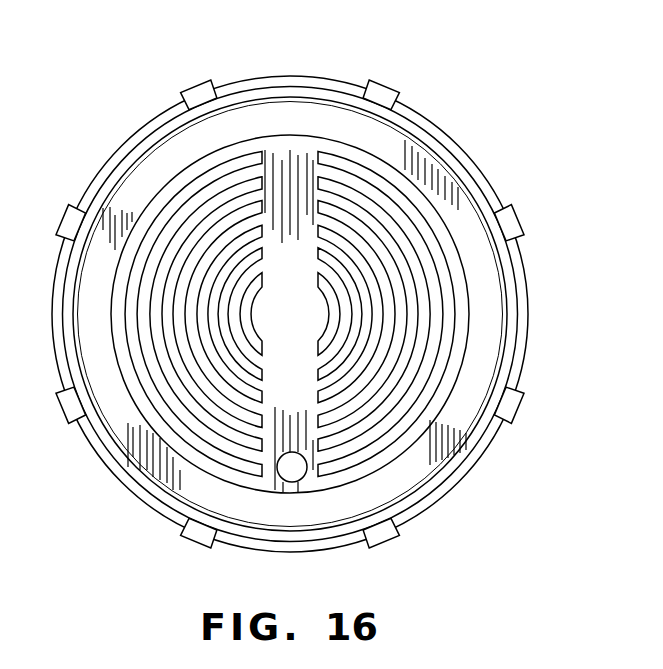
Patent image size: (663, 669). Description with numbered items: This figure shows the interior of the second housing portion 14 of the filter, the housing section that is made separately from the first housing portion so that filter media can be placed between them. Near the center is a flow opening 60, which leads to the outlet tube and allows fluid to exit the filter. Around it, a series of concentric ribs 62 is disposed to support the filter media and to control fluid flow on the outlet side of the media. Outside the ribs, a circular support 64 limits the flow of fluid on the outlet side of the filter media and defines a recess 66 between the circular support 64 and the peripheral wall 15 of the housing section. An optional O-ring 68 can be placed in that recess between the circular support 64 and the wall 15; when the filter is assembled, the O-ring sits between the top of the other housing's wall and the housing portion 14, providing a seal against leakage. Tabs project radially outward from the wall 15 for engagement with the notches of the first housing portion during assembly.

The second housing portion 14 is at (528, 260).
The peripheral wall 15 is at (485, 172).
The recess 66 is at (443, 138).
The O-ring 68 is at (402, 122).
The circular support 64 is at (278, 105).
The concentric ribs 62 is at (177, 238).
The flow opening 60 is at (293, 470).